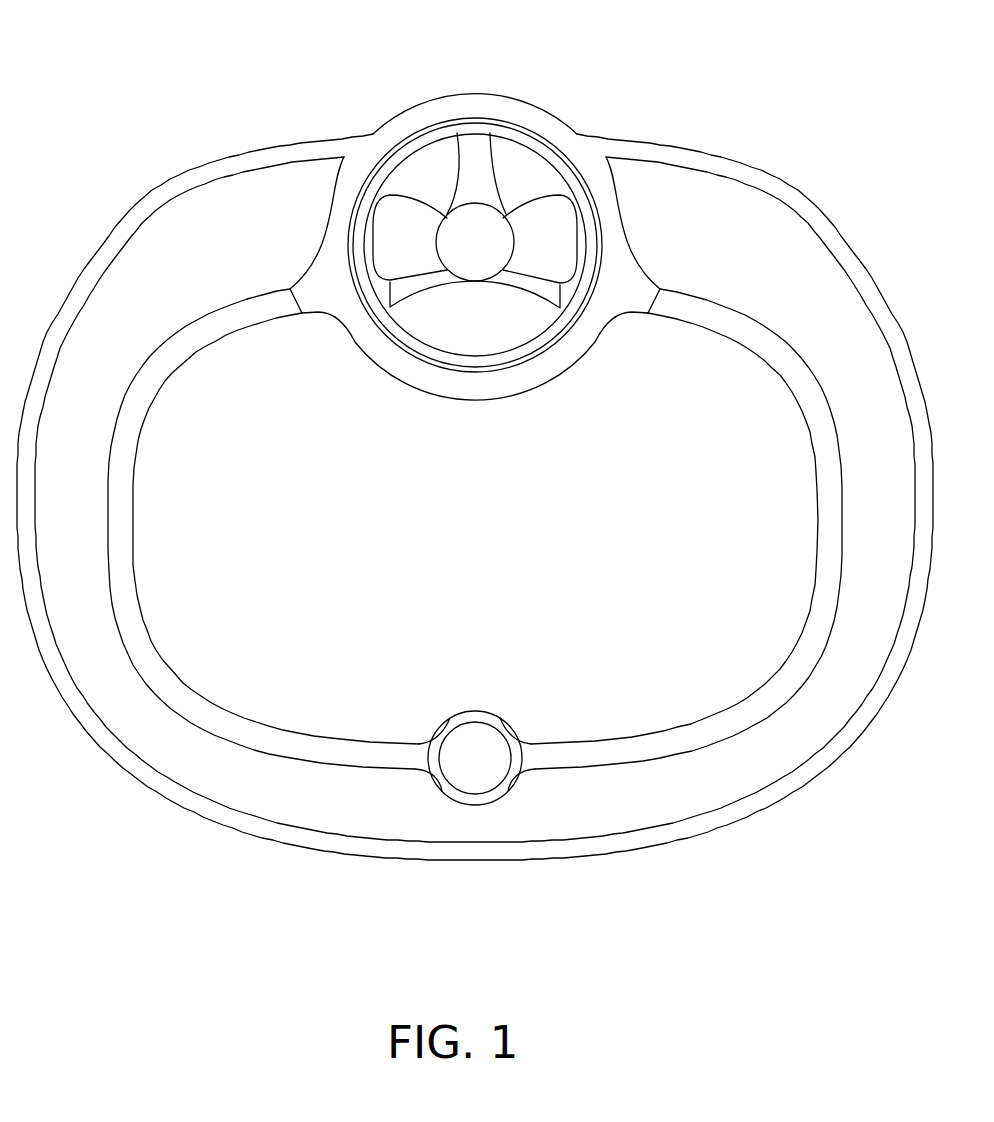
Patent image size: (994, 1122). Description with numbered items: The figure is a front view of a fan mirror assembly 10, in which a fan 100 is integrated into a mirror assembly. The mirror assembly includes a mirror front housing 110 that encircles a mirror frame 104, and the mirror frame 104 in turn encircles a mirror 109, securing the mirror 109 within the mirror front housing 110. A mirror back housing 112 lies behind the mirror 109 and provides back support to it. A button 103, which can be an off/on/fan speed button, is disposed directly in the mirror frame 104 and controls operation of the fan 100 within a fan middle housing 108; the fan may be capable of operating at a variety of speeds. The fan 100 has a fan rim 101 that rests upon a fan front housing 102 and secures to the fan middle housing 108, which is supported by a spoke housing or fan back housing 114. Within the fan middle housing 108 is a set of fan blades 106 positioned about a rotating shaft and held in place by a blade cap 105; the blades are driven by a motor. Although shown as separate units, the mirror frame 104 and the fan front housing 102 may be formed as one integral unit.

The fan mirror assembly 10 is at (101, 68).
The fan 100 is at (419, 105).
The fan rim 101 is at (392, 160).
The fan front housing 102 is at (605, 310).
The button 103 is at (475, 760).
The mirror frame 104 is at (313, 742).
The blade cap 105 is at (478, 240).
The fan blades 106 is at (550, 240).
The fan middle housing 108 is at (523, 357).
The mirror 109 is at (463, 563).
The mirror front housing 110 is at (658, 793).
The mirror back housing 112 is at (818, 760).
The fan back housing 114 is at (475, 168).